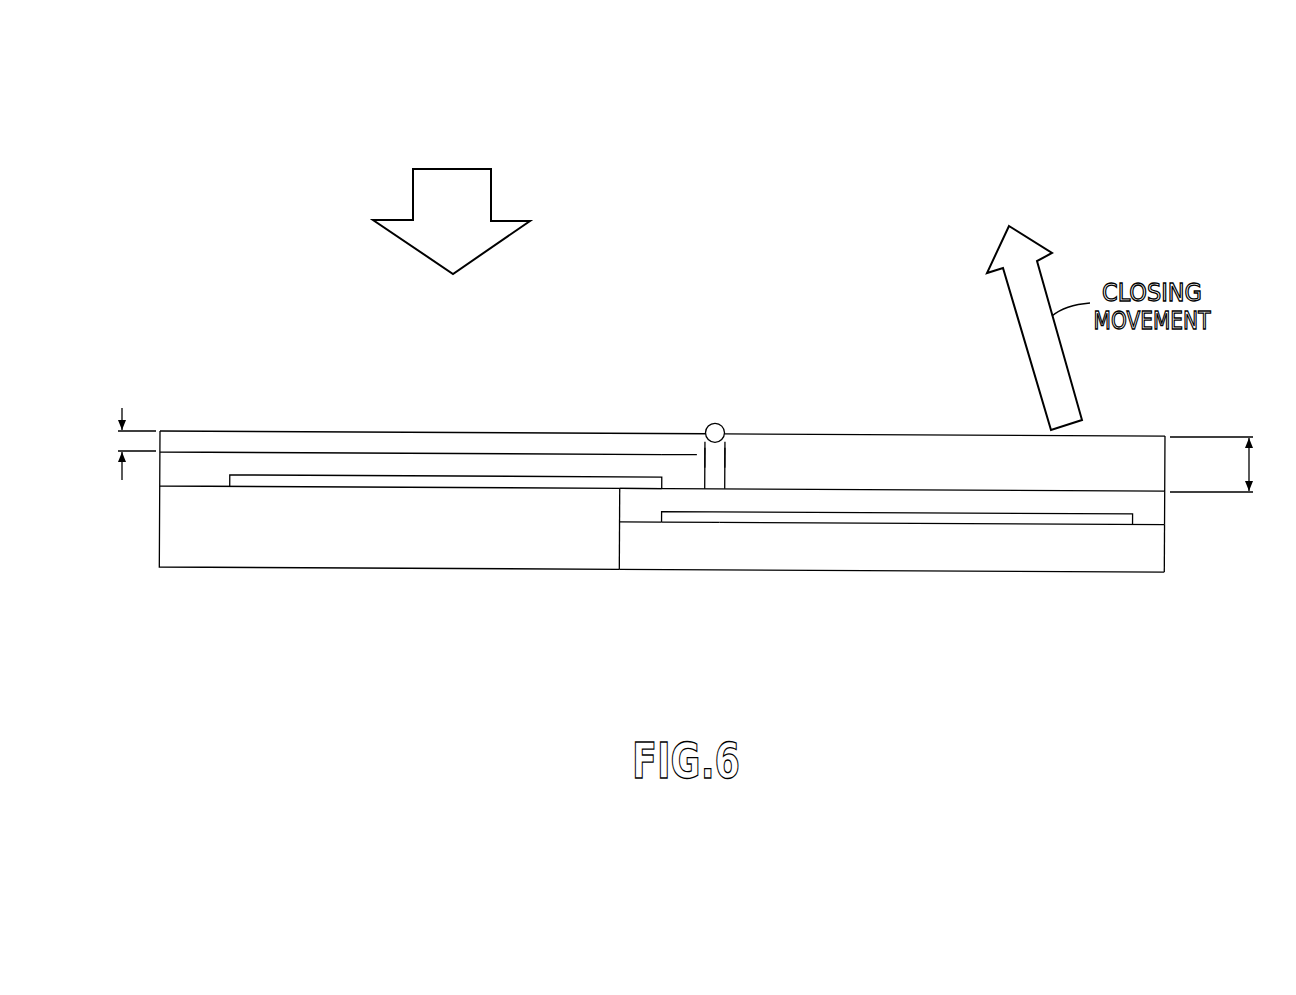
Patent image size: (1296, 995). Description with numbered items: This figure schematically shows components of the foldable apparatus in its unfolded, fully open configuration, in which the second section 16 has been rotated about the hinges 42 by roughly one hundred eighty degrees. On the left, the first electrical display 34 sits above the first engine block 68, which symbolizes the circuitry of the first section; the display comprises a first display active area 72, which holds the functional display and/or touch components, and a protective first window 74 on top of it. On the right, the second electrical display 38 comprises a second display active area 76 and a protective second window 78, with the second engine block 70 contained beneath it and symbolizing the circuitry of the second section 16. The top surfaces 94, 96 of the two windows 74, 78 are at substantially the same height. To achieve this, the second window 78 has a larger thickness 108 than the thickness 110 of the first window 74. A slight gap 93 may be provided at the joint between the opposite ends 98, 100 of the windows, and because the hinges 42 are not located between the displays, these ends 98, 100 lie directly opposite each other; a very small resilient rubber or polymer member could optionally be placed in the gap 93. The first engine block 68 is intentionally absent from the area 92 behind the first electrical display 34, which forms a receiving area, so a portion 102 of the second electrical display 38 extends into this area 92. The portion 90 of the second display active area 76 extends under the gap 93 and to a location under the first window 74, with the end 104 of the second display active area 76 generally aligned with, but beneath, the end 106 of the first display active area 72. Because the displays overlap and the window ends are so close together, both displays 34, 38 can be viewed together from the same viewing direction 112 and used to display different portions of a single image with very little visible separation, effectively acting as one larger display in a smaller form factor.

The second section 16 is at (1167, 543).
The first electrical display 34 is at (158, 468).
The second electrical display 38 is at (1167, 499).
The hinges 42 is at (718, 424).
The first engine block 68 is at (447, 570).
The second engine block 70 is at (1138, 570).
The first display active area 72 is at (270, 482).
The first window 74 is at (265, 429).
The second display active area 76 is at (993, 522).
The second window 78 is at (1167, 468).
The portion of the second display active area 90 is at (712, 520).
The receiving area 92 is at (618, 540).
The gap 93 is at (718, 468).
The top surface of the first window 94 is at (483, 431).
The top surface of the second window 96 is at (885, 434).
The end of the first window 98 is at (702, 450).
The end of the second window 100 is at (728, 452).
The portion of the second electrical display 102 is at (650, 505).
The end of the second display active area 104 is at (652, 522).
The end of the first display active area 106 is at (668, 478).
The thickness of the second window 108 is at (1255, 462).
The thickness of the first window 110 is at (119, 441).
The viewing direction 112 is at (492, 201).